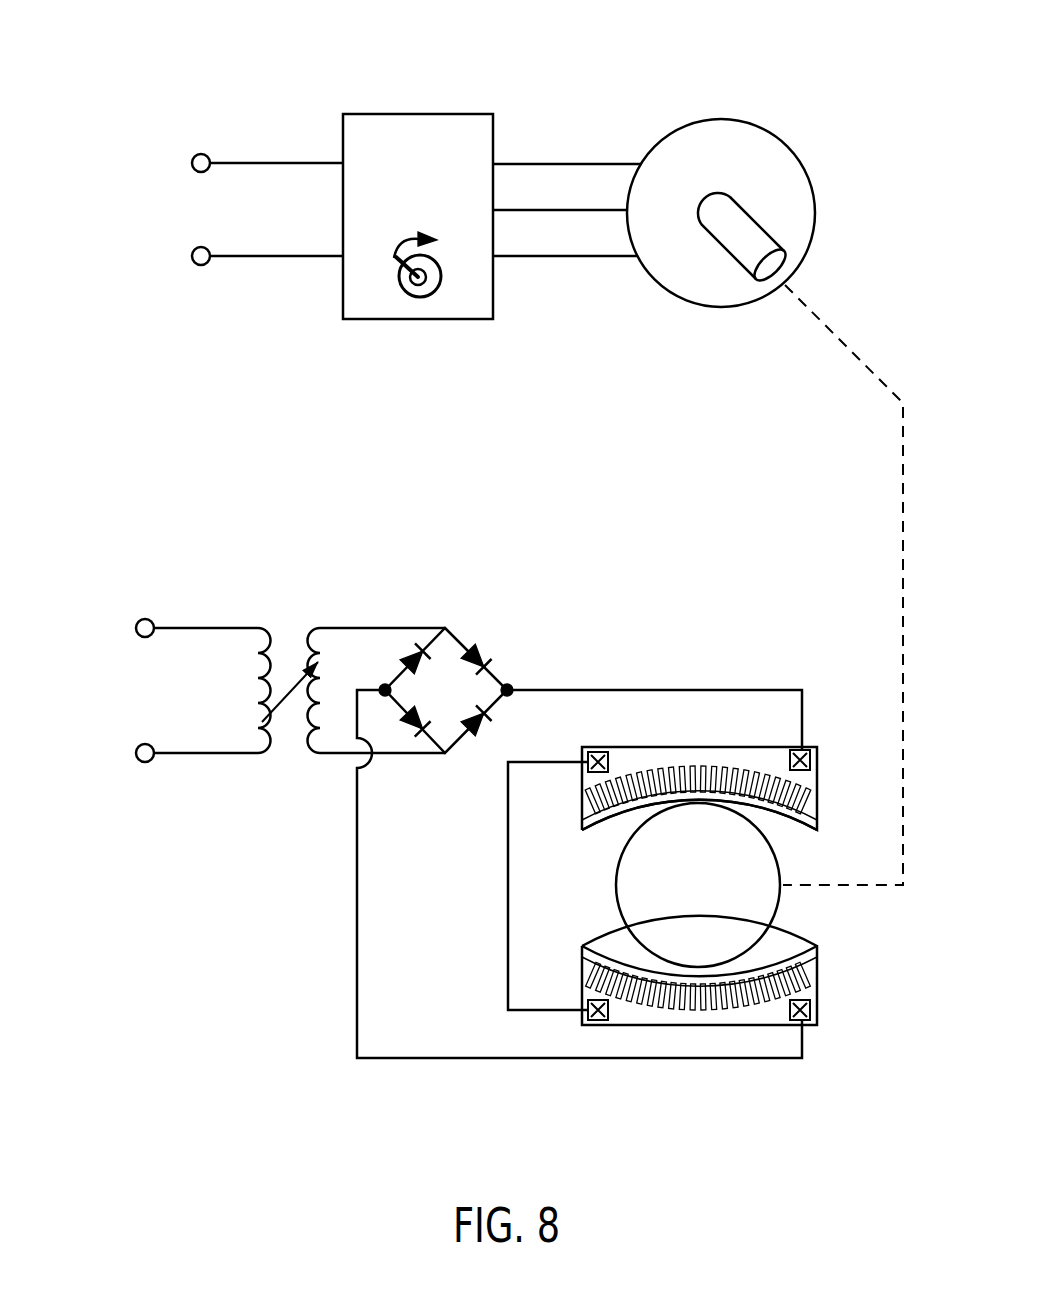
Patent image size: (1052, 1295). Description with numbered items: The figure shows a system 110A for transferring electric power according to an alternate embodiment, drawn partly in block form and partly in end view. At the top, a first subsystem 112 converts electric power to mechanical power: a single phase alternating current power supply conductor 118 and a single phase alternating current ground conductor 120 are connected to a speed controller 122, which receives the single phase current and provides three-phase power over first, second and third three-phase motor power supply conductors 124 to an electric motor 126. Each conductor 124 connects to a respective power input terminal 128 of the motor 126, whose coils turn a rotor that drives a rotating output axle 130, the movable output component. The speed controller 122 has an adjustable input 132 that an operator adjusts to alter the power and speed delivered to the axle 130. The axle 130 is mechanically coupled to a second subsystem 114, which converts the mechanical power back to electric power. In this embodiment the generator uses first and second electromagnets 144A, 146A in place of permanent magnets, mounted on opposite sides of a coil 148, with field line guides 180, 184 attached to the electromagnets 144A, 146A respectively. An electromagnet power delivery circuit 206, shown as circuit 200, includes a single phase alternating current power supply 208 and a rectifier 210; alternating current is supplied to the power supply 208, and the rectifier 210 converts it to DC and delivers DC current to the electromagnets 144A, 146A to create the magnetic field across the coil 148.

The system 110A is at (145, 88).
The first subsystem 112 is at (130, 222).
The second subsystem 114 is at (135, 895).
The single phase alternating current power supply conductor 118 is at (262, 162).
The single phase alternating current ground conductor 120 is at (287, 255).
The speed controller 122 is at (413, 114).
The three-phase motor power supply conductors 124 is at (567, 232).
The electric motor 126 is at (778, 93).
The power input terminal 128 is at (640, 162).
The rotating output axle 130 is at (765, 226).
The adjustable input 132 is at (418, 300).
The first electromagnet 144A is at (816, 788).
The second electromagnet 146A is at (817, 1000).
The coil 148 is at (617, 884).
The field line guide 180 is at (808, 832).
The field line guide 184 is at (812, 942).
The DC power supply circuit 200 is at (425, 1080).
The electromagnet power delivery circuit 206 is at (553, 556).
The single phase alternating current power supply 208 is at (200, 606).
The rectifier 210 is at (443, 606).